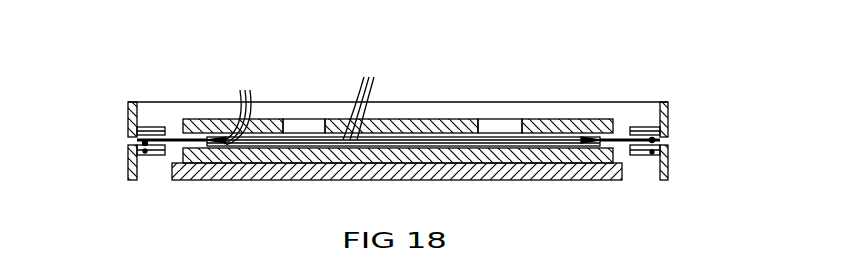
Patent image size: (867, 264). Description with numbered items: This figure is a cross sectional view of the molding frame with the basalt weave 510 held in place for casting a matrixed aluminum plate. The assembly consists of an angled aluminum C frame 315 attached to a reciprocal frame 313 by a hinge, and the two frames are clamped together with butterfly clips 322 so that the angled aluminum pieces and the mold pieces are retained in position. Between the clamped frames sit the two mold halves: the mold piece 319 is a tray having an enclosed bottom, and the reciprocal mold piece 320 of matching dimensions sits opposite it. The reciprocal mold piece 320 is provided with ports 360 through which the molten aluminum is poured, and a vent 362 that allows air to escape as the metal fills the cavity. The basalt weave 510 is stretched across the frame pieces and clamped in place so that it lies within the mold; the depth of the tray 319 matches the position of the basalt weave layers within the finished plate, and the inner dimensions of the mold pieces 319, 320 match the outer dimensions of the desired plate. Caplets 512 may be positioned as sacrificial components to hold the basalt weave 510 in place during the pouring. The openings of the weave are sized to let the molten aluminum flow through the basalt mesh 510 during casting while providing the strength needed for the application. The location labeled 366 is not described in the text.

The reciprocal frame 313 is at (128, 124).
The angled aluminum C frame 315 is at (128, 167).
The mold piece 319 is at (602, 153).
The reciprocal mold piece 320 is at (605, 120).
The butterfly clips 322 is at (153, 125).
The ports 360 is at (297, 127).
The vent 362 is at (493, 127).
The solder joint 366 is at (146, 152).
The basalt weave 510 is at (368, 97).
The caplets 512 is at (229, 106).